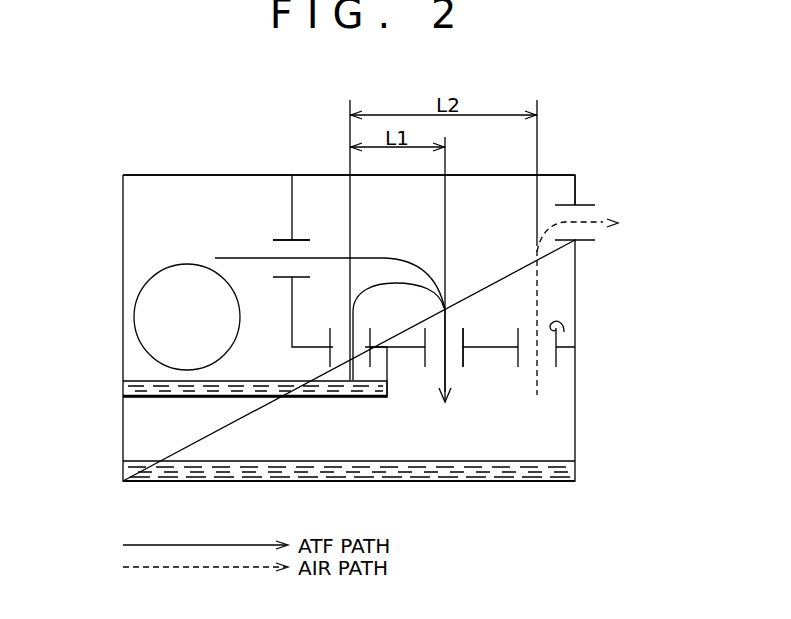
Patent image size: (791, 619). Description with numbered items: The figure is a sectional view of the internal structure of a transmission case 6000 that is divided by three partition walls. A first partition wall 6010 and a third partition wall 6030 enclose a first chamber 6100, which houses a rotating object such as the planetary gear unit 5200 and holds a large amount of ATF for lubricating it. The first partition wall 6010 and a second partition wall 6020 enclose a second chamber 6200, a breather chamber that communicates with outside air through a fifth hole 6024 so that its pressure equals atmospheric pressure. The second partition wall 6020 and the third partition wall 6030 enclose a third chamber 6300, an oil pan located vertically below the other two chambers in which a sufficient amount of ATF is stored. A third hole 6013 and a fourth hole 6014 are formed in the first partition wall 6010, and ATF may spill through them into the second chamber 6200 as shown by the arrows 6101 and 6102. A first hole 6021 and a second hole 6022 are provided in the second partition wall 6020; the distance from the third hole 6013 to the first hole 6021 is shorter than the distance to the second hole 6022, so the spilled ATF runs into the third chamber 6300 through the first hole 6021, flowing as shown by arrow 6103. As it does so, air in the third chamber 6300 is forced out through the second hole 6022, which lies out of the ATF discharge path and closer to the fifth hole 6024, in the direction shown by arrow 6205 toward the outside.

The transmission case 6000 is at (533, 483).
The first chamber 6100 is at (153, 237).
The planetary gear unit 5200 is at (130, 318).
The third partition wall 6030 is at (160, 397).
The third chamber 6300 is at (153, 443).
The arrow 6101 is at (238, 257).
The first partition wall 6010 is at (292, 188).
The fourth hole 6014 is at (310, 241).
The second chamber 6200 is at (555, 188).
The arrow 6205 is at (585, 222).
The fifth hole 6024 is at (595, 238).
The first hole 6021 is at (462, 329).
The second partition wall 6020 is at (492, 346).
The second hole 6022 is at (564, 332).
The arrow 6102 is at (349, 370).
The third hole 6013 is at (370, 349).
The arrow 6103 is at (443, 373).